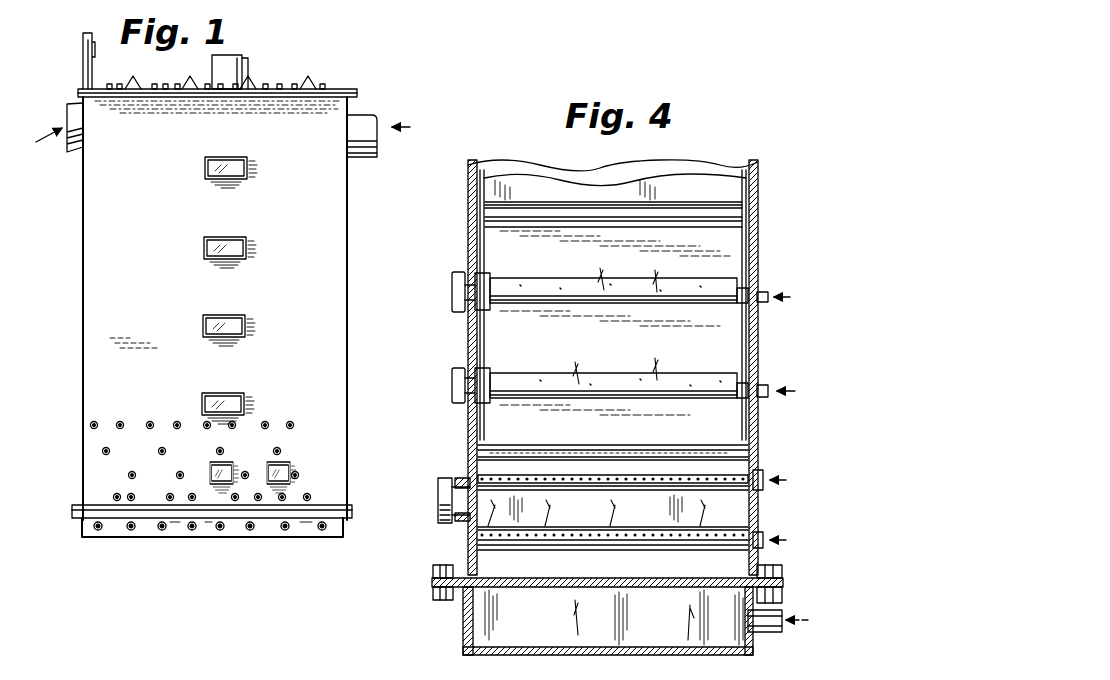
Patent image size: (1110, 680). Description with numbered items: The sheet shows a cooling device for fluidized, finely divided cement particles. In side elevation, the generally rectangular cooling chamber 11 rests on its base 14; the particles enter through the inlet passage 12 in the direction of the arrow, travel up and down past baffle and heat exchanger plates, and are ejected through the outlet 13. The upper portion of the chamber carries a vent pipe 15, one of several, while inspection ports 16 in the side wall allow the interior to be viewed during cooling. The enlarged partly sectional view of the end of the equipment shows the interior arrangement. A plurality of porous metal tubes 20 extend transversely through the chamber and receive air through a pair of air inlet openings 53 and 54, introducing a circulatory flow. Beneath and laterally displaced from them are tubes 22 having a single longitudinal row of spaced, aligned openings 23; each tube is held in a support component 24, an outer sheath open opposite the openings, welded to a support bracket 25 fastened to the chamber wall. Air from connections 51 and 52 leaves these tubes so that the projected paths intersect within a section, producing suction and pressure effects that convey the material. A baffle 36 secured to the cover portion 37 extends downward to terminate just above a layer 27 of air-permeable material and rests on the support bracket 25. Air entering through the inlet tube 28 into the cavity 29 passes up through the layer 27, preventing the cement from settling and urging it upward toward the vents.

In FIG. 1, the cooling chamber 11 is at (325, 208).
In FIG. 4, the cooling chamber 11 is at (470, 452).
In FIG. 1, the inlet passage 12 is at (362, 125).
In FIG. 1, the outlet 13 is at (70, 124).
In FIG. 1, the base 14 is at (116, 537).
In FIG. 4, the base 14 is at (710, 655).
In FIG. 1, the vent pipe 15 is at (246, 70).
In FIG. 1, the inspection ports 16 is at (210, 470).
In FIG. 1, the porous metal tubes 20 is at (279, 449).
In FIG. 4, the porous metal tubes 20 is at (698, 377).
In FIG. 1, the tubes 22 is at (262, 548).
In FIG. 4, the tubes 22 is at (653, 540).
In FIG. 4, the openings 23 is at (637, 538).
In FIG. 4, the support component 24 is at (440, 493).
In FIG. 4, the support bracket 25 is at (587, 566).
In FIG. 4, the layer of air-permeable material 27 is at (528, 583).
In FIG. 4, the inlet tube 28 is at (767, 627).
In FIG. 4, the cavity 29 is at (480, 615).
In FIG. 4, the baffle 36 is at (592, 353).
In FIG. 1, the cover portion 37 is at (333, 96).
In FIG. 4, the connection 51 is at (760, 478).
In FIG. 4, the connection 52 is at (760, 532).
In FIG. 4, the air inlet opening 53 is at (765, 292).
In FIG. 4, the air inlet opening 54 is at (782, 380).